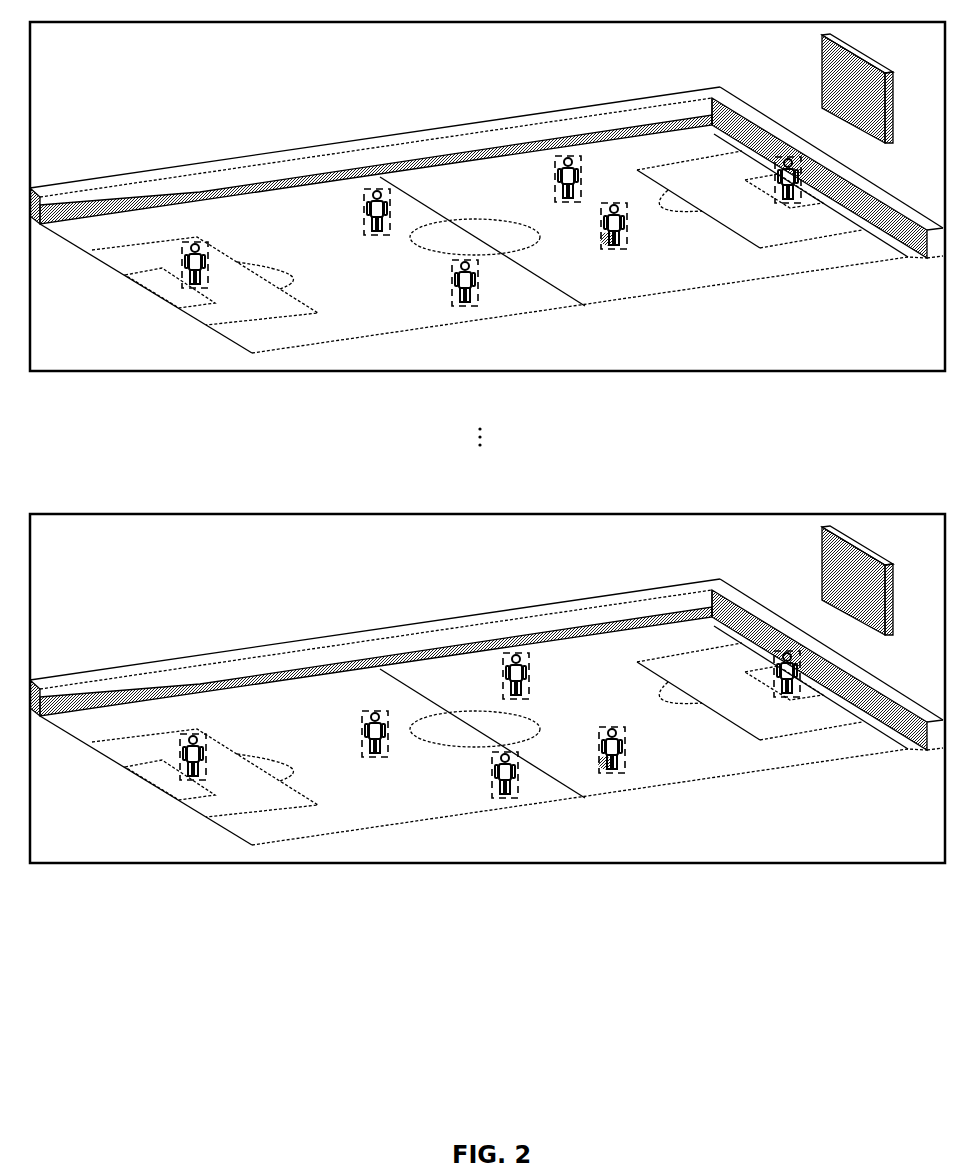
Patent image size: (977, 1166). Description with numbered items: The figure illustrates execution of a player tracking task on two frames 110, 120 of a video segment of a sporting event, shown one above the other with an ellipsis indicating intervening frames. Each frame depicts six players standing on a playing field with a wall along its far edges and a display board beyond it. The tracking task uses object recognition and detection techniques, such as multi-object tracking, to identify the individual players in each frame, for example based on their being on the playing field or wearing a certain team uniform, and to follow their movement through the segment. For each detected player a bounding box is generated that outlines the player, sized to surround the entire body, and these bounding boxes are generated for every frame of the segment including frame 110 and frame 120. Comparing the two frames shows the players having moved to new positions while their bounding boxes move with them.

The frame 110 is at (99, 57).
The frame 120 is at (99, 557).